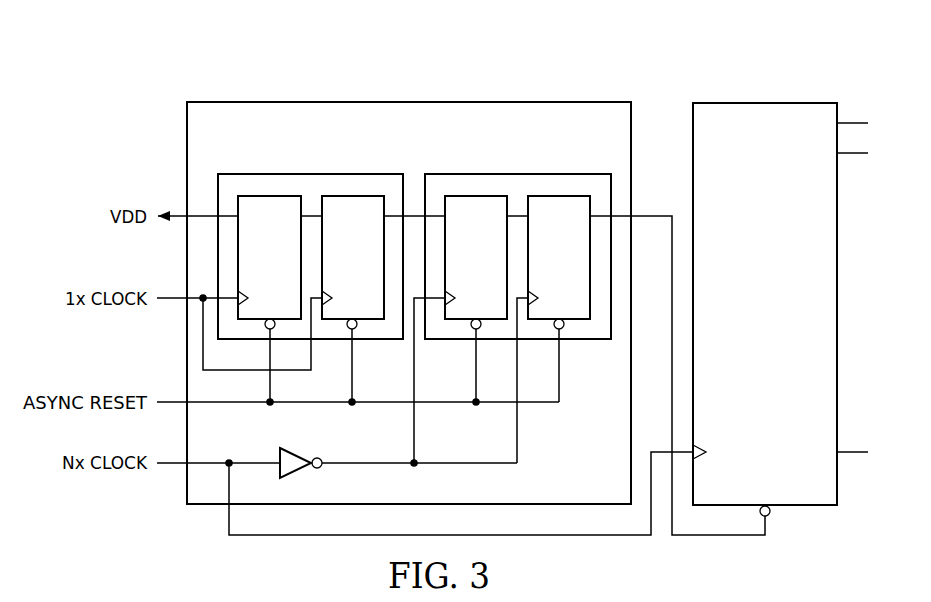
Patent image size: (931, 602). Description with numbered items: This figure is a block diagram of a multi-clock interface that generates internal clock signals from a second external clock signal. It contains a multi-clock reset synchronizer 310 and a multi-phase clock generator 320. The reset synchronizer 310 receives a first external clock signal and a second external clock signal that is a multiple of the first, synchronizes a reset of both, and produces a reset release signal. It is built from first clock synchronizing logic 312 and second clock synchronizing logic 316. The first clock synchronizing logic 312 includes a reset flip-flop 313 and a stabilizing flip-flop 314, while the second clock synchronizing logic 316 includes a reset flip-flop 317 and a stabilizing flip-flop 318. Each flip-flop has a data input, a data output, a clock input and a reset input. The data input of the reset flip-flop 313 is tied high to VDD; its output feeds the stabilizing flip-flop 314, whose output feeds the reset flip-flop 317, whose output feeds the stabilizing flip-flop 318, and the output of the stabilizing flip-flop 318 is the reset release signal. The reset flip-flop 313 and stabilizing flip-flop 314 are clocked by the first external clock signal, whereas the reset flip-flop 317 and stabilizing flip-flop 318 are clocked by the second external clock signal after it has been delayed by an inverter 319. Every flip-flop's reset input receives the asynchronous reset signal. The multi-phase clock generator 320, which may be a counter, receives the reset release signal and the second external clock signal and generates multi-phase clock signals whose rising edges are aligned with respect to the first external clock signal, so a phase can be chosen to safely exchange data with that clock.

The multi-clock reset synchronizer 310 is at (331, 102).
The first clock synchronizing logic 312 is at (285, 174).
The reset flip-flop 313 is at (251, 269).
The stabilizing flip-flop 314 is at (334, 269).
The second clock synchronizing logic 316 is at (556, 174).
The reset flip-flop 317 is at (457, 269).
The stabilizing flip-flop 318 is at (540, 269).
The inverter 319 is at (300, 455).
The multi-phase clock generator 320 is at (746, 318).